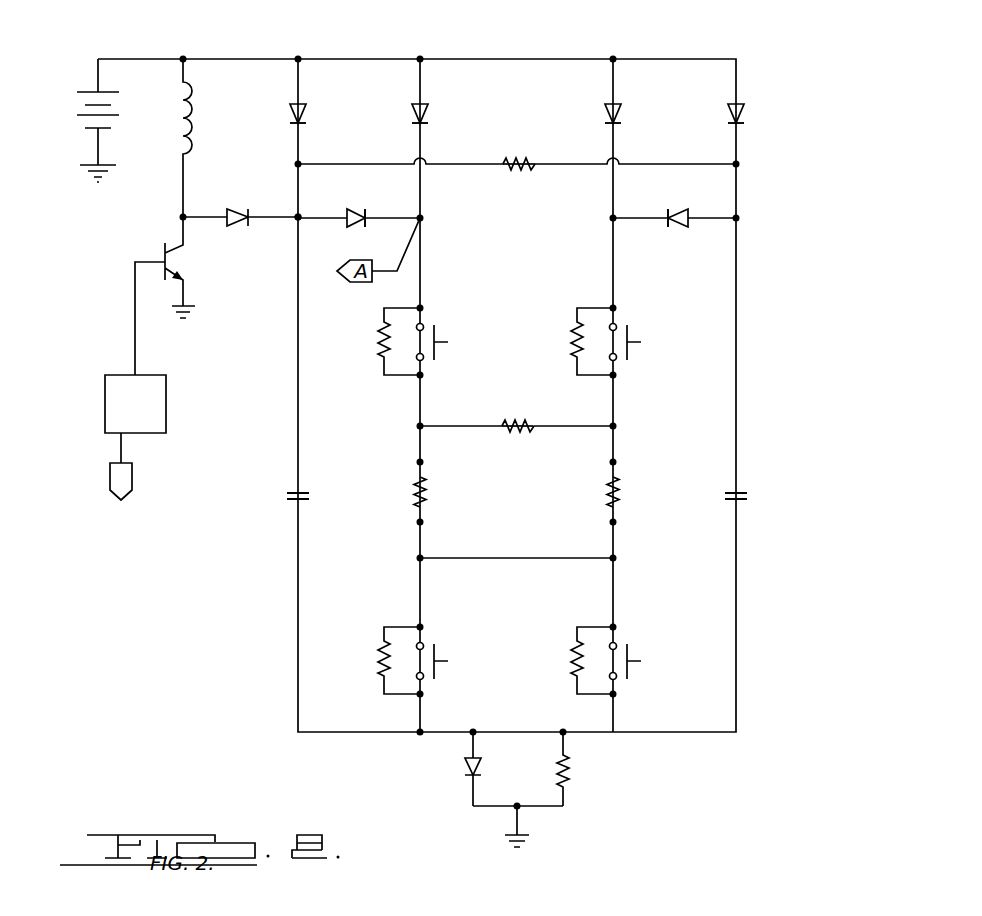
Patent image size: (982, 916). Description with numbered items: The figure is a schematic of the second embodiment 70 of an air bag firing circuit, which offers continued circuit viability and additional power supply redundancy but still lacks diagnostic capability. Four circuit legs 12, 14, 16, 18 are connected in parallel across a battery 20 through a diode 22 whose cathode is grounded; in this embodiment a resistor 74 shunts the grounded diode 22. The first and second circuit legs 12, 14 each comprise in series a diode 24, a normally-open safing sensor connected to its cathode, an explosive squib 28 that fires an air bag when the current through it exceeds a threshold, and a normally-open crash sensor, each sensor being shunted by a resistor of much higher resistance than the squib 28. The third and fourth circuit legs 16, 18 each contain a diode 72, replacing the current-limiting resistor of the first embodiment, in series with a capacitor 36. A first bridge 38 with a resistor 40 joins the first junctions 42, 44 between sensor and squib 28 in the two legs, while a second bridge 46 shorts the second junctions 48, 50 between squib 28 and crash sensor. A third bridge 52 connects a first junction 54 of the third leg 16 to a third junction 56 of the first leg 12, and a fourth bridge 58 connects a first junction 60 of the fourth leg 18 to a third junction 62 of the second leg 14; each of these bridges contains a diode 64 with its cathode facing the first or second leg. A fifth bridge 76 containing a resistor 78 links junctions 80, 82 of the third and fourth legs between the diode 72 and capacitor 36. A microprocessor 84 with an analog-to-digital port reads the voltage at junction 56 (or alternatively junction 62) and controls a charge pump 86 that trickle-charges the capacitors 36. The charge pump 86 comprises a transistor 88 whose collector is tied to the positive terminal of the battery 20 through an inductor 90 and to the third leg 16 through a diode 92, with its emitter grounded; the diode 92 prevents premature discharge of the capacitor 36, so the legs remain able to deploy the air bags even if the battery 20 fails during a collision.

The first circuit leg 12 is at (420, 87).
The second circuit leg 14 is at (613, 85).
The third circuit leg 16 is at (298, 87).
The fourth circuit leg 18 is at (736, 85).
The battery 20 is at (77, 112).
The diode 22 is at (468, 773).
The diode 24 is at (428, 124).
The explosive squib 28 is at (416, 500).
The capacitor 36 is at (287, 496).
The first bridge 38 is at (533, 433).
The resistor 40 is at (526, 416).
The first junction 42 is at (418, 427).
The first junction 44 is at (616, 428).
The second bridge 46 is at (513, 548).
The second junction 48 is at (418, 559).
The second junction 50 is at (616, 560).
The third bridge 52 is at (345, 226).
The first junction 54 is at (296, 221).
The third junction 56 is at (424, 222).
The fourth bridge 58 is at (675, 232).
The first junction 60 is at (740, 220).
The third junction 62 is at (611, 222).
The diode 64 is at (364, 208).
The second embodiment 70 is at (773, 53).
The diode 72 is at (306, 124).
The resistor 74 is at (568, 775).
The fifth bridge 76 is at (545, 170).
The resistor 78 is at (510, 172).
The junction 80 is at (296, 163).
The junction 82 is at (740, 163).
The microprocessor 84 is at (166, 398).
The charge pump 86 is at (215, 248).
The transistor 88 is at (162, 250).
The inductor 90 is at (172, 132).
The diode 92 is at (246, 210).